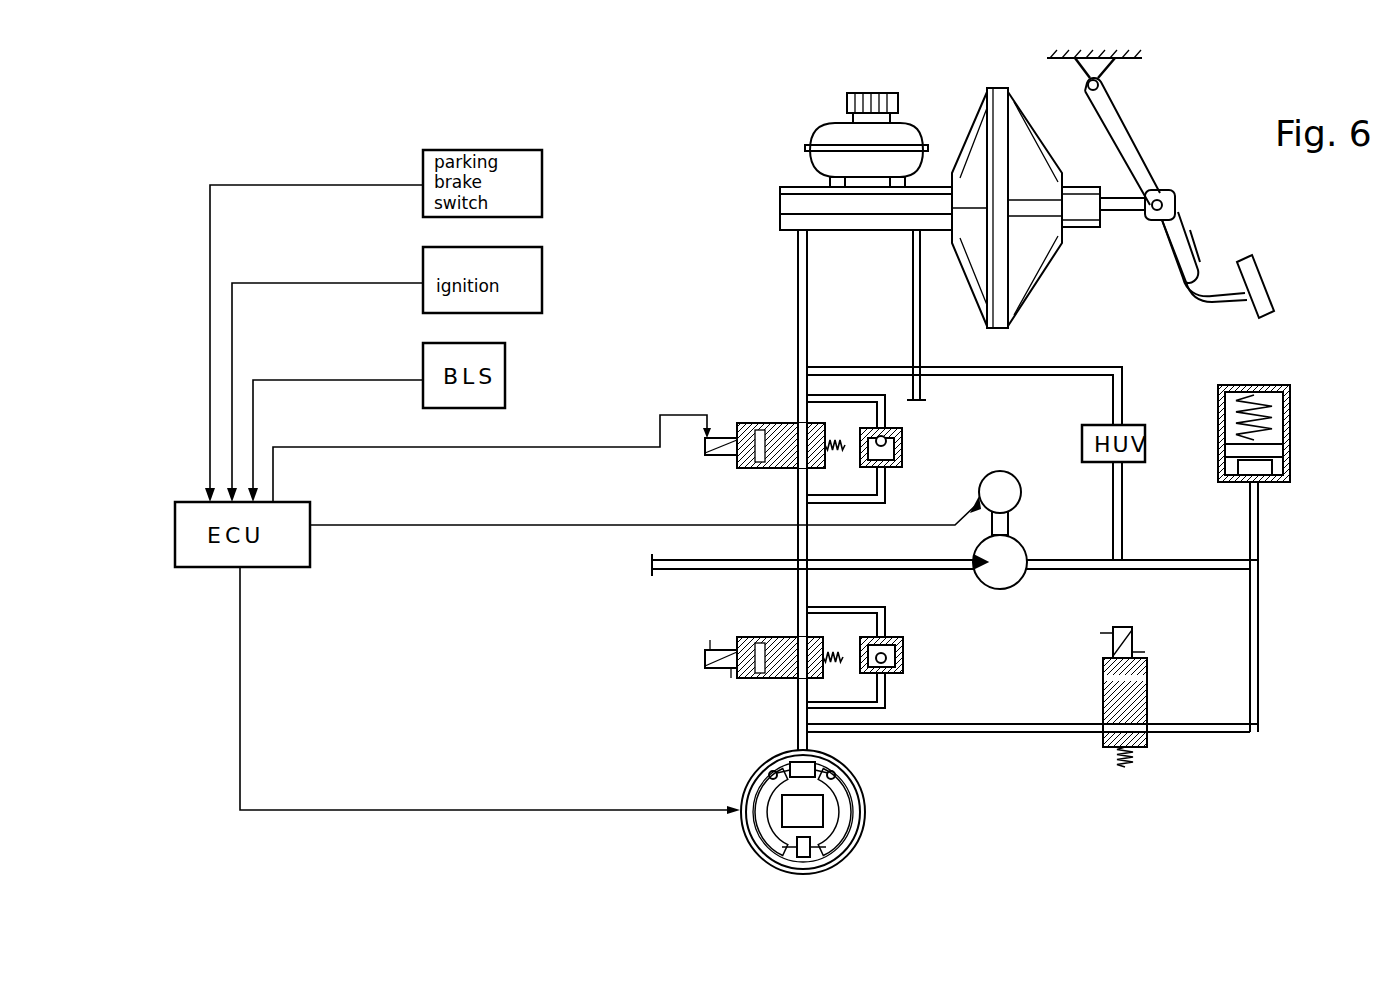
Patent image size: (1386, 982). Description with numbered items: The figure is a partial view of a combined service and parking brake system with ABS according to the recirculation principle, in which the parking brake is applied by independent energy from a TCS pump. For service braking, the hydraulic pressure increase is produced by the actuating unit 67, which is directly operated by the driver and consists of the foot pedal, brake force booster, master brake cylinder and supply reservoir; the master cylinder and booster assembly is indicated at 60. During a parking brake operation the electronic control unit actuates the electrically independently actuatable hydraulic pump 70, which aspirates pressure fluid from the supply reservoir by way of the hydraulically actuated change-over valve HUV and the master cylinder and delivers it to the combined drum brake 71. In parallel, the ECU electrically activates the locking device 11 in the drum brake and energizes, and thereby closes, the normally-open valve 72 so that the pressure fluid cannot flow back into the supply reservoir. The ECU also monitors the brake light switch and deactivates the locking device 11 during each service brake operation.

The master cylinder with vacuum brake booster 60 is at (720, 148).
The actuating unit 67 is at (1040, 85).
The hydraulic pump 70 is at (1010, 522).
The drum brake 71 is at (740, 774).
The normally-open valve 72 is at (768, 420).
The locking device 11 is at (825, 811).